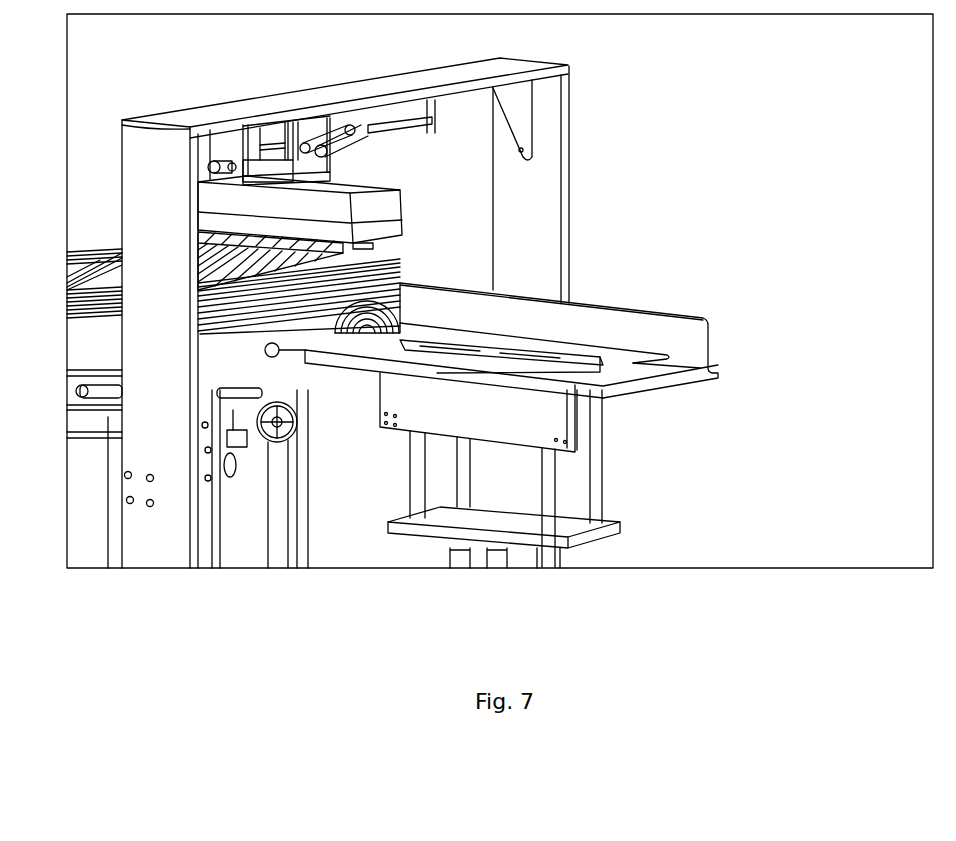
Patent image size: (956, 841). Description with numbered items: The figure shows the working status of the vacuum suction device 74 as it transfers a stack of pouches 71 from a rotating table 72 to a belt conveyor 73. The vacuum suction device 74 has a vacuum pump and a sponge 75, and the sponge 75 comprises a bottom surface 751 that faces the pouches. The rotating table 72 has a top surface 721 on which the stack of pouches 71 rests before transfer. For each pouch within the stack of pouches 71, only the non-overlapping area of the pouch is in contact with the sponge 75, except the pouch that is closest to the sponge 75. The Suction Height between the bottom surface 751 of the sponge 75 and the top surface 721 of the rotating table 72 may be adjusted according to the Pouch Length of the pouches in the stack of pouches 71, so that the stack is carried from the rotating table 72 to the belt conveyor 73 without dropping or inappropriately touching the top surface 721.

The stack of pouches 71 is at (110, 257).
The rotating table 72 is at (690, 313).
The top surface 721 is at (482, 342).
The belt conveyor 73 is at (320, 326).
The vacuum suction device 74 is at (393, 203).
The sponge 75 is at (393, 228).
The bottom surface 751 is at (373, 243).